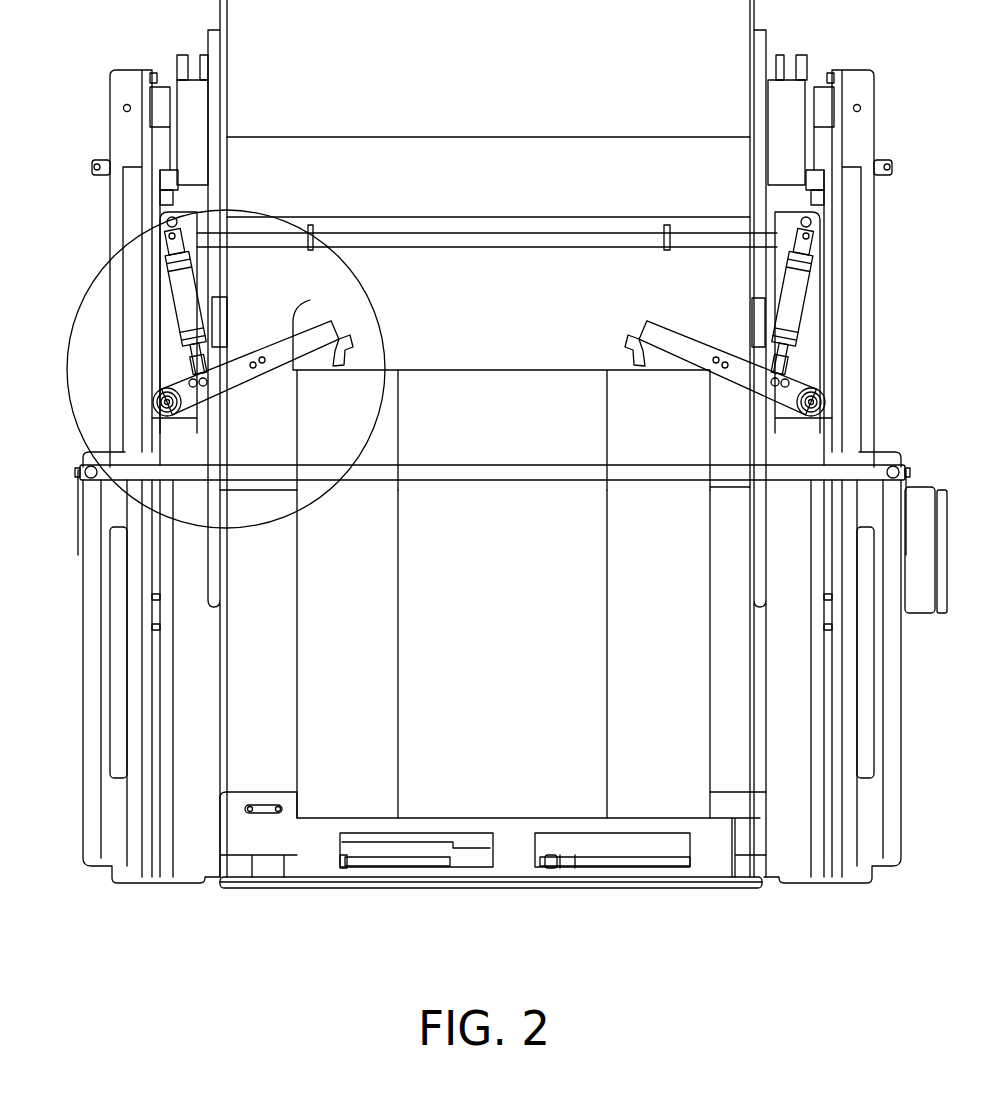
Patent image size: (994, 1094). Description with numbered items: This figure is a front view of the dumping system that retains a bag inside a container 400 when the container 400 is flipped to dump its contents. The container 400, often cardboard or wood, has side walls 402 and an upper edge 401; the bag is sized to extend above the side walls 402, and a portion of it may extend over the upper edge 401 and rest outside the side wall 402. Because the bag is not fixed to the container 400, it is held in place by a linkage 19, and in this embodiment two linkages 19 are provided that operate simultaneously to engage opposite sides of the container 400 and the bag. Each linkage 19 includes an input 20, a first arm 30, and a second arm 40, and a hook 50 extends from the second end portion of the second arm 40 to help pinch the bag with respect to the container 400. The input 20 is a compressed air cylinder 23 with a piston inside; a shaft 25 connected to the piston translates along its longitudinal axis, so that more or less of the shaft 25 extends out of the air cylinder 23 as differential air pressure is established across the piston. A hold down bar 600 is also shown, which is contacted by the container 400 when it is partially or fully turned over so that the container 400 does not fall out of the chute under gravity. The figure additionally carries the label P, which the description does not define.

The linkage 19 is at (790, 305).
The input 20 is at (119, 292).
The compressed air cylinder 23 is at (183, 297).
The shaft 25 is at (190, 357).
The first arm 30 is at (205, 437).
The second arm 40 is at (245, 400).
The hook 50 is at (334, 361).
The container 400 is at (512, 777).
The upper edge 401 is at (478, 373).
The side walls 402 is at (298, 610).
The hold down bar 600 is at (240, 352).
The pivot point P is at (75, 407).